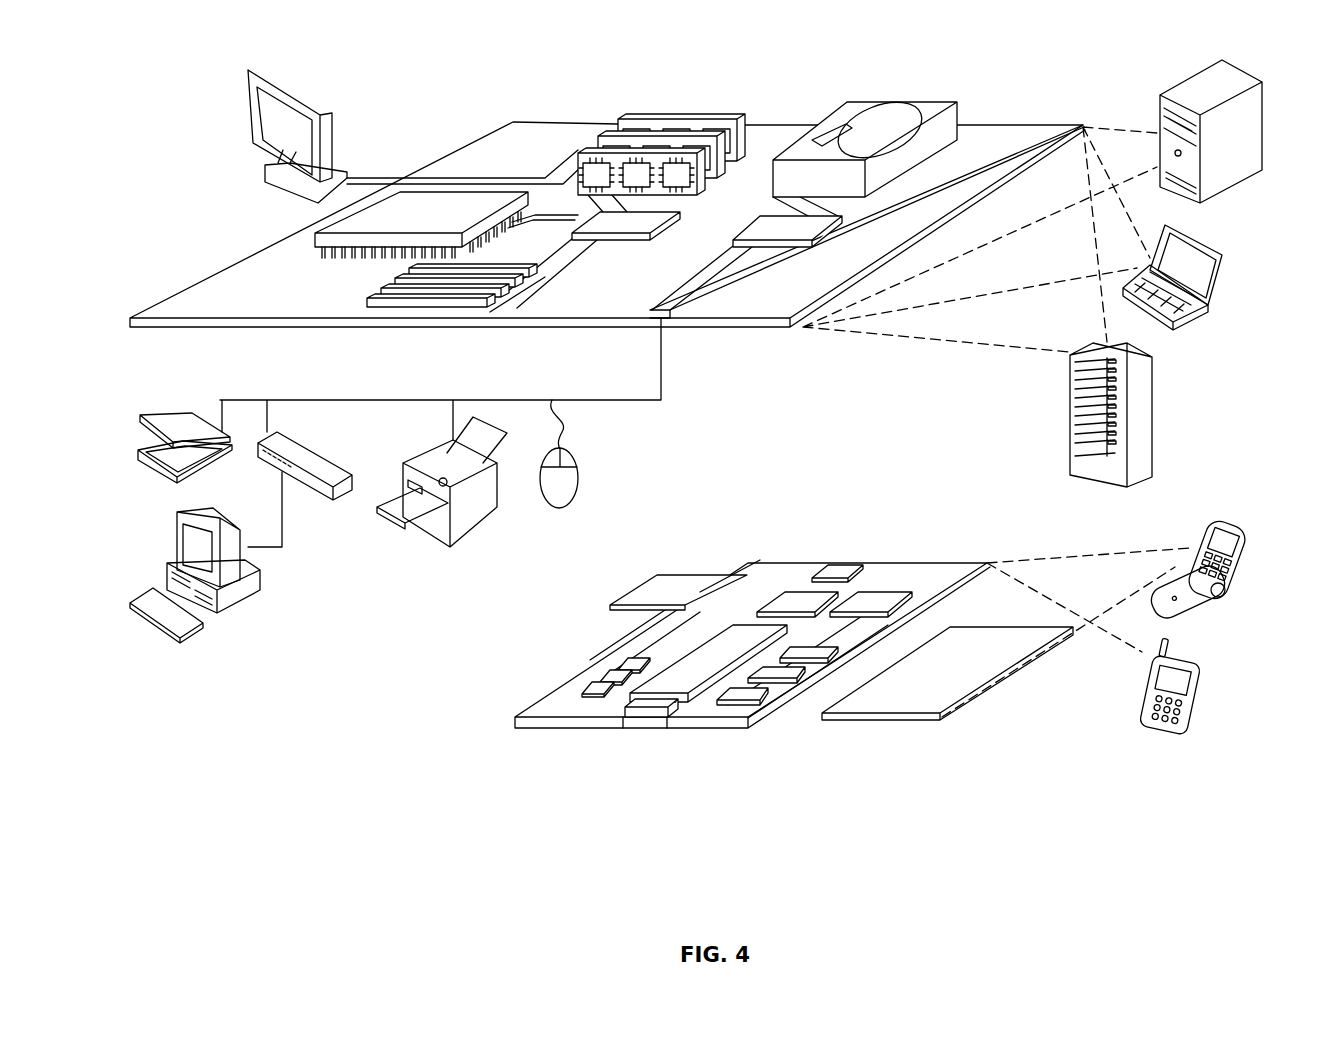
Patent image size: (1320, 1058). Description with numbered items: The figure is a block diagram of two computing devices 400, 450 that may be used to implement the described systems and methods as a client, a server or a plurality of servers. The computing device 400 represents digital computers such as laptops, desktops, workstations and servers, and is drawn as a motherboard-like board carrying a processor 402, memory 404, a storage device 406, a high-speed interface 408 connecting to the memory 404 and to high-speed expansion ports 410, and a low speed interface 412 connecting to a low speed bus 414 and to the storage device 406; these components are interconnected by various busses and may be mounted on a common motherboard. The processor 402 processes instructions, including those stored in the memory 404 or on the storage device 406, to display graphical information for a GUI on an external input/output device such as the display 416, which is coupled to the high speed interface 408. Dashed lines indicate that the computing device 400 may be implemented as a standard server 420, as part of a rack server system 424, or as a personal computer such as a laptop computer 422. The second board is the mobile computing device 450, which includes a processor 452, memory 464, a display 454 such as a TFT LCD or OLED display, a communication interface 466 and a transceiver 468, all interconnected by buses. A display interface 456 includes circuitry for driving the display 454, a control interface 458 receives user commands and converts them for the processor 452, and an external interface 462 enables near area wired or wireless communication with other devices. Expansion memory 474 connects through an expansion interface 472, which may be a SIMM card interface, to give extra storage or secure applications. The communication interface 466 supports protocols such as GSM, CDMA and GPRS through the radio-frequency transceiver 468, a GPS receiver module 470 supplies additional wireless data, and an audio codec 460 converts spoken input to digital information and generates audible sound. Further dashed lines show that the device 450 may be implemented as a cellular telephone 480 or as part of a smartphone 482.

The computing device 400 is at (432, 96).
The processor 402 is at (320, 236).
The memory 404 is at (638, 116).
The storage device 406 is at (852, 104).
The high-speed interface 408 is at (580, 218).
The high-speed expansion ports 410 is at (383, 293).
The low speed interface 412 is at (770, 226).
The low speed bus 414 is at (674, 323).
The display 416 is at (250, 70).
The standard server 420 is at (1160, 118).
The laptop computer 422 is at (1222, 254).
The rack server system 424 is at (1070, 440).
The computing device 450 is at (494, 726).
The processor 452 is at (683, 690).
The display 454 is at (910, 703).
The display interface 456 is at (753, 700).
The control interface 458 is at (786, 680).
The audio codec 460 is at (807, 660).
The external interface 462 is at (650, 718).
The memory 464 is at (598, 682).
The communication interface 466 is at (797, 600).
The transceiver 468 is at (872, 600).
The GPS receiver module 470 is at (847, 566).
The expansion interface 472 is at (727, 578).
The expansion memory 474 is at (735, 577).
The cellular telephone 480 is at (1205, 532).
The smartphone 482 is at (1150, 694).